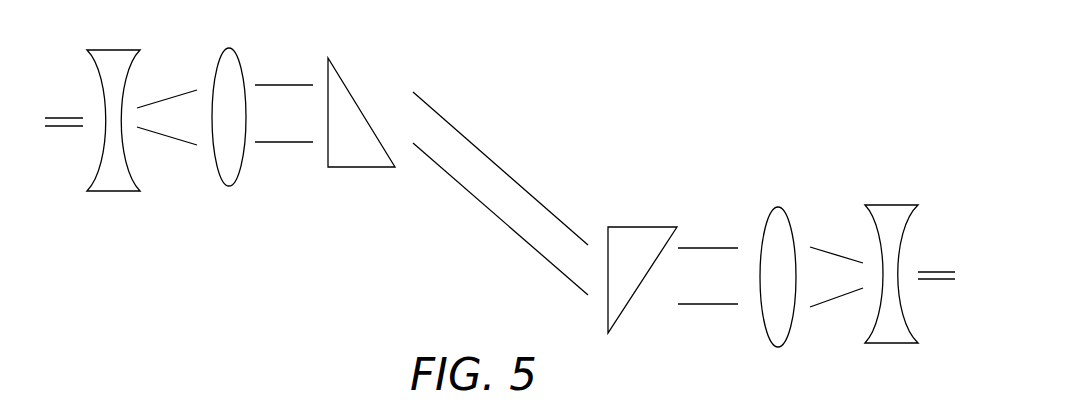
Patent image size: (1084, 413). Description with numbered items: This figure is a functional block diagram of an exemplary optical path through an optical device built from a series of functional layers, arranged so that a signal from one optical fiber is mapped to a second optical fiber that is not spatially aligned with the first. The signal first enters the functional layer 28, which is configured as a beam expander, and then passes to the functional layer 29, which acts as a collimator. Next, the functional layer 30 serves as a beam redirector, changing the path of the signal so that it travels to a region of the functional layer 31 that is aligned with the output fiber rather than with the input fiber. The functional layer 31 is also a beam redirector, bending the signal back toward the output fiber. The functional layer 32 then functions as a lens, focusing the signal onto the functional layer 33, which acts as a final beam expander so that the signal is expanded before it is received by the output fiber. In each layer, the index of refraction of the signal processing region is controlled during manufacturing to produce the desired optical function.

The functional layer 28 is at (115, 50).
The functional layer 29 is at (229, 48).
The functional layer 30 is at (328, 58).
The functional layer 31 is at (638, 227).
The functional layer 32 is at (778, 207).
The functional layer 33 is at (890, 205).